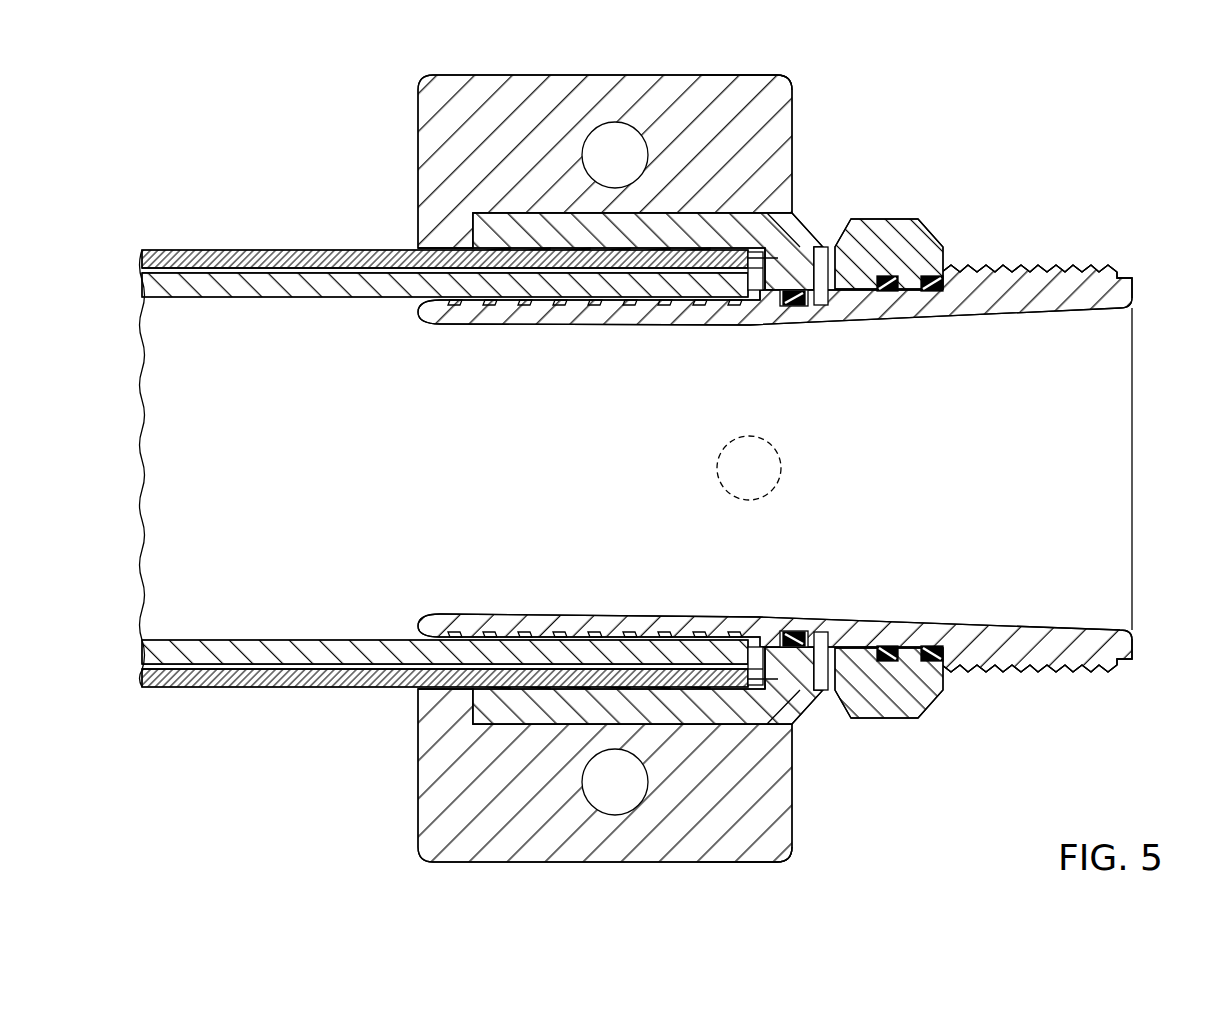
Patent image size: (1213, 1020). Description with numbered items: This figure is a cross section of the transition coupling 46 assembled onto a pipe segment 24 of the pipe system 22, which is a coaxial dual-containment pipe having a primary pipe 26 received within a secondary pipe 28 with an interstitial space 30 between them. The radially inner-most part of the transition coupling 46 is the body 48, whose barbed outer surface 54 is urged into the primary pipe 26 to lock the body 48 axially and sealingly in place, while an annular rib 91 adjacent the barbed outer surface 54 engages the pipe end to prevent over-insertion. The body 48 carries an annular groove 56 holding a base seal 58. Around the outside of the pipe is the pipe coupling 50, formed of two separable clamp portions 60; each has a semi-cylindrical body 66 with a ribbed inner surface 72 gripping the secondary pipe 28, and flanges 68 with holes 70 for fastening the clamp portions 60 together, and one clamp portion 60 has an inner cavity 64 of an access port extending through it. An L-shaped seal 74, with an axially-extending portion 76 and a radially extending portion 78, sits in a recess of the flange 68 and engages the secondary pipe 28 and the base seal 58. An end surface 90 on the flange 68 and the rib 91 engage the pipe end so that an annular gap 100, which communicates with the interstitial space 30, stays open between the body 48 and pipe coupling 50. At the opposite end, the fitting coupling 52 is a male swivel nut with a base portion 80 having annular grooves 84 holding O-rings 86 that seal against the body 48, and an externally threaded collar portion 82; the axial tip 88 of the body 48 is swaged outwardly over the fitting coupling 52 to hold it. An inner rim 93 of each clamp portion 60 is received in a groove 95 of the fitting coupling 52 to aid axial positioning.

The pipe system 22 is at (188, 703).
The pipe segment 24 is at (230, 703).
The primary pipe 26 is at (340, 650).
The secondary pipe 28 is at (322, 684).
The interstitial space 30 is at (388, 666).
The transition coupling 46 is at (853, 777).
The body 48 is at (905, 624).
The pipe coupling 50 is at (775, 783).
The fitting coupling 52 is at (1038, 676).
The barbed outer surface 54 is at (520, 302).
The annular groove 56 is at (812, 306).
The base seal 58 is at (792, 306).
The clamp portion 60 is at (508, 85).
The inner cavity 64 is at (716, 462).
The semi-cylindrical body 66 is at (806, 706).
The flange 68 is at (706, 85).
The hole 70 is at (631, 131).
The ribbed inner surface 72 is at (475, 255).
The L-shaped seal 74 is at (732, 218).
The axially-extending portion 76 is at (702, 222).
The radially extending portion 78 is at (788, 272).
The base portion 80 is at (853, 722).
The collar portion 82 is at (1040, 270).
The annular grooves 84 is at (888, 664).
The O-ring 86 is at (884, 276).
The axial tip 88 is at (1136, 283).
The end surface 90 is at (758, 256).
The annular rib 91 is at (770, 300).
The inner rim 93 is at (812, 642).
The groove 95 is at (816, 640).
The annular gap 100 is at (746, 280).